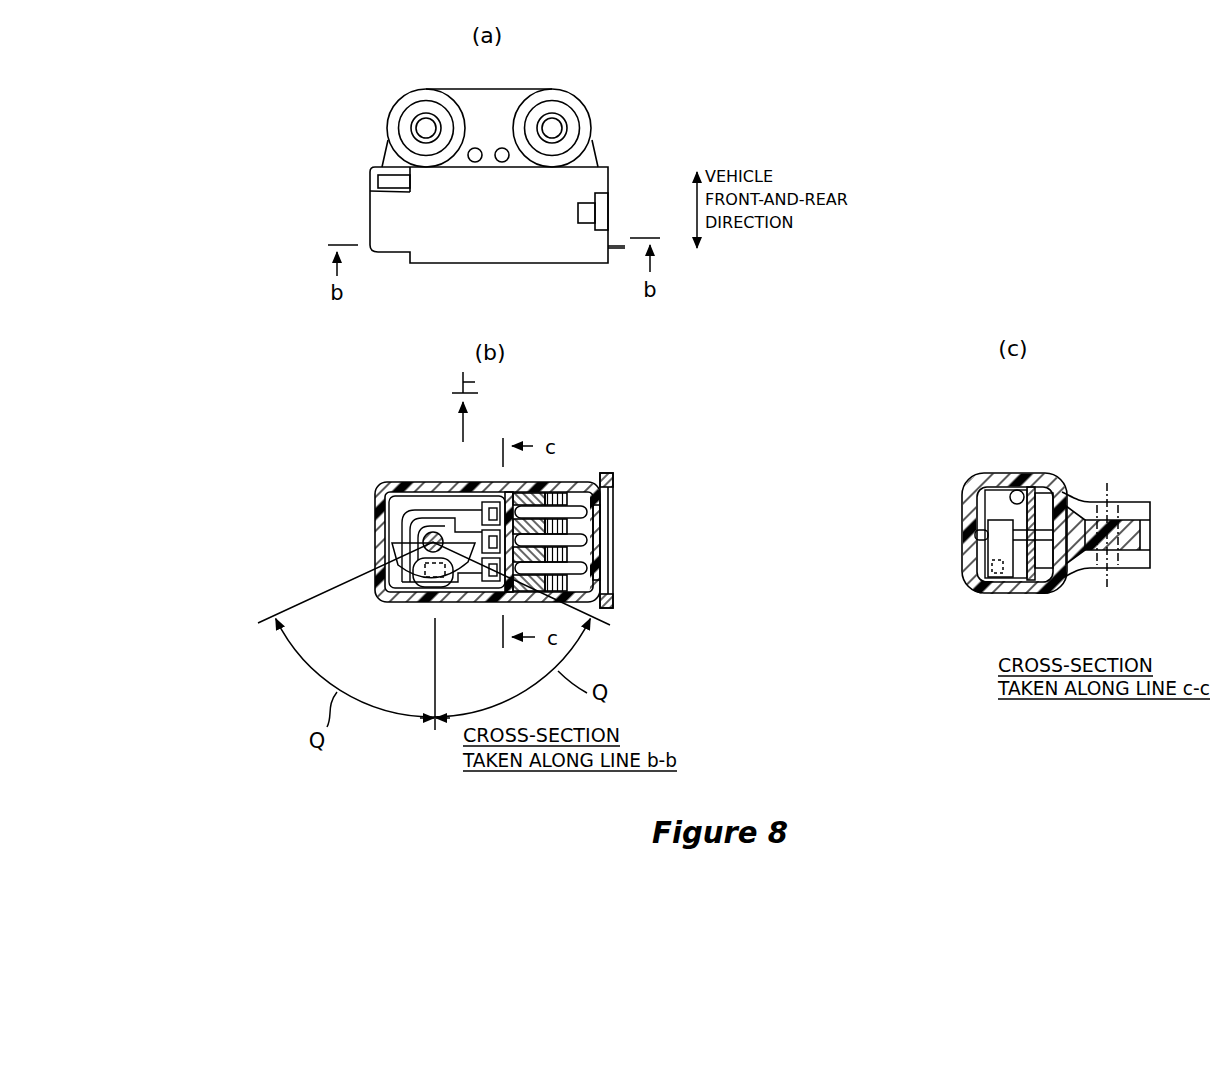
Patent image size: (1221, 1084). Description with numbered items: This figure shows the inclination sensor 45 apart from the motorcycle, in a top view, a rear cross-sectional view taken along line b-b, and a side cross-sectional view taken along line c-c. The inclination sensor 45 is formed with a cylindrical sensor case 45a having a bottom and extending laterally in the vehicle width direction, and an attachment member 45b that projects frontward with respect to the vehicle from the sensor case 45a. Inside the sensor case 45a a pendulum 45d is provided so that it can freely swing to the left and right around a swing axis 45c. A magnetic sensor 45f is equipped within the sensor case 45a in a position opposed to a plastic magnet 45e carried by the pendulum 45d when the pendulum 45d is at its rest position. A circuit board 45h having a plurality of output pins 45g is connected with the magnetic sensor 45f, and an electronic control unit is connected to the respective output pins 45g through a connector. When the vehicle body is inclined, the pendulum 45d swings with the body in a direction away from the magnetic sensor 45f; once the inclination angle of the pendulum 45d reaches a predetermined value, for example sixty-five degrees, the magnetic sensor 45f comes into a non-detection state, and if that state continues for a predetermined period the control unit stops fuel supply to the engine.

The inclination sensor 45 is at (617, 134).
The sensor case 45a is at (547, 263).
The attachment member 45b is at (520, 88).
The swing axis 45c is at (433, 532).
The pendulum 45d is at (397, 568).
The plastic magnet 45e is at (468, 578).
The magnetic sensor 45f is at (440, 590).
The output pins 45g is at (588, 568).
The circuit board 45h is at (1018, 488).